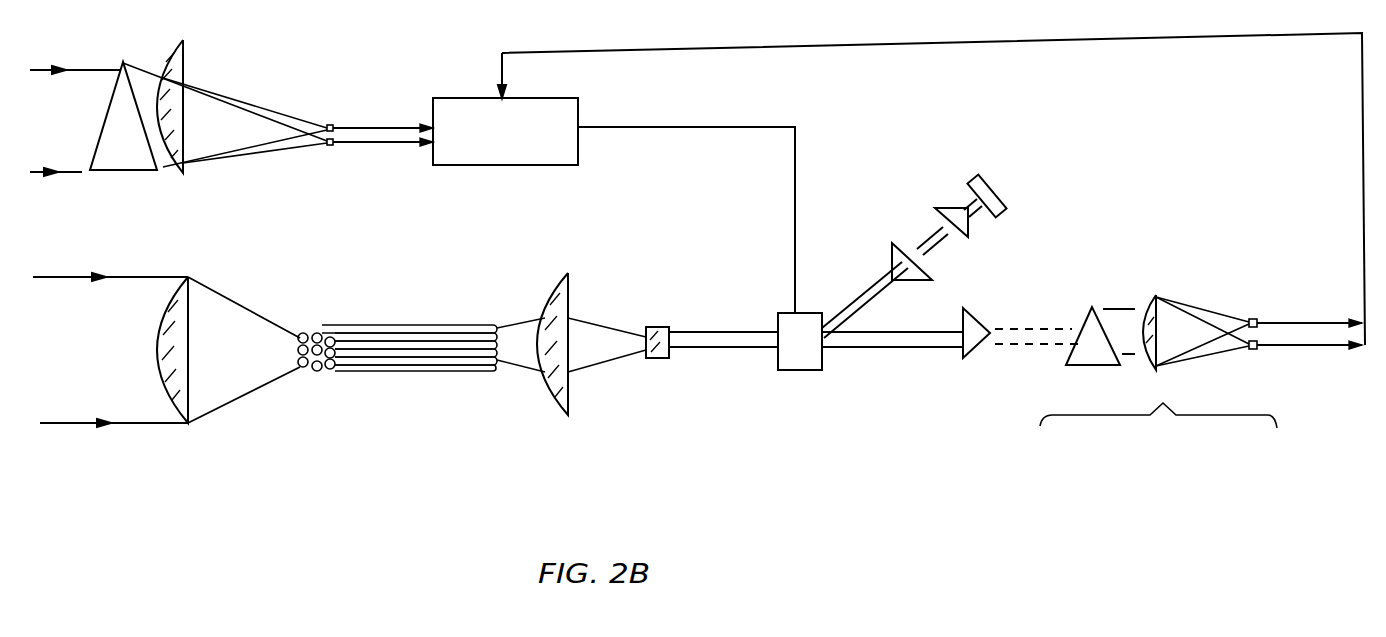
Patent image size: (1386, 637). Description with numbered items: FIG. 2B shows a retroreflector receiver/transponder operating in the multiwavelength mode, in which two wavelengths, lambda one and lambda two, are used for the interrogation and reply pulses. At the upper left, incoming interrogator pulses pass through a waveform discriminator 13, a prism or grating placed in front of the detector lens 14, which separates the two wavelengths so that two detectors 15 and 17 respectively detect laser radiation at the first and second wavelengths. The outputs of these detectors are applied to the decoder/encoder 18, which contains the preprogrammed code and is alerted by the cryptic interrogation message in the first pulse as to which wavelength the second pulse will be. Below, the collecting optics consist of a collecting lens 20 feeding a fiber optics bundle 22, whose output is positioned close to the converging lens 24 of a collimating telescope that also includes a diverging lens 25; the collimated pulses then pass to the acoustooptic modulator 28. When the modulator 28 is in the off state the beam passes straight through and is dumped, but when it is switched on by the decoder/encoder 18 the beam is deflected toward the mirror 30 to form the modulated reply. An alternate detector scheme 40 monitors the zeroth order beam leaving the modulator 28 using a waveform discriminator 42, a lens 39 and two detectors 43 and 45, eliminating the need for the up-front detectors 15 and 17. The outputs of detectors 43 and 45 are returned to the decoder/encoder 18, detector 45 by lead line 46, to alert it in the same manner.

The waveform discriminator 13 is at (123, 62).
The detector lens 14 is at (186, 60).
The detector 15 is at (332, 123).
The detector 17 is at (330, 147).
The decoder/encoder 18 is at (565, 148).
The collecting lens 20 is at (190, 340).
The fiber optics bundle 22 is at (400, 372).
The converging lens 24 is at (563, 415).
The diverging lens 25 is at (664, 359).
The acoustooptic modulator 28 is at (820, 370).
The mirror 30 is at (985, 177).
The lens 39 is at (1158, 293).
The alternate detector scheme 40 is at (1183, 493).
The waveform discriminator 42 is at (1090, 306).
The detector 43 is at (1258, 318).
The detector 45 is at (1258, 350).
The lead line 46 is at (1225, 35).